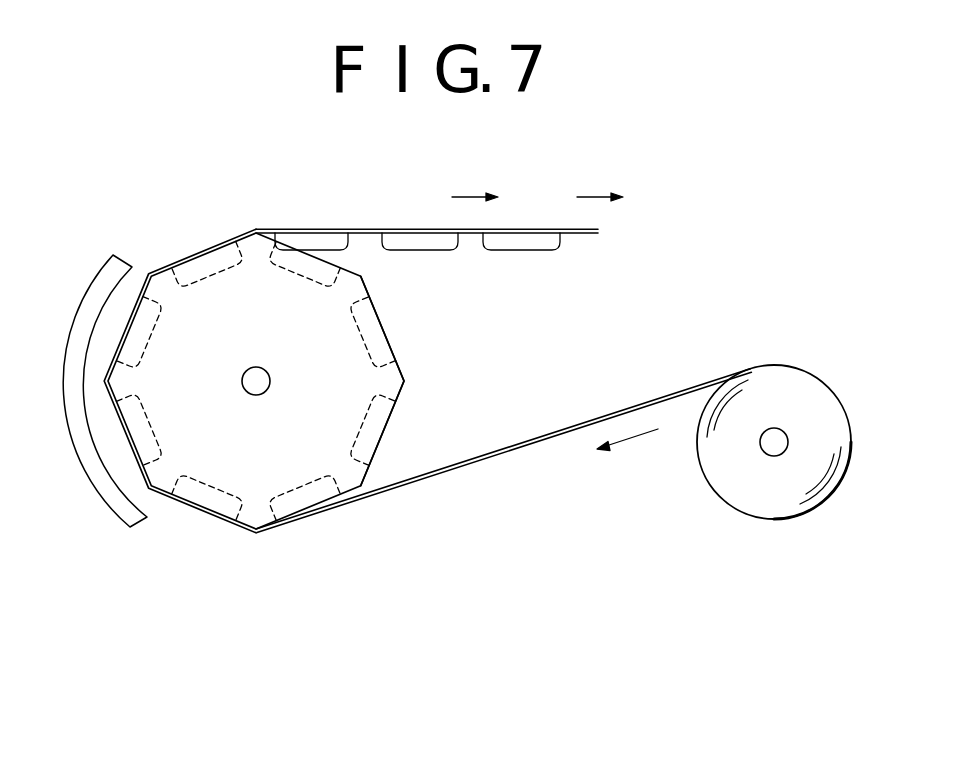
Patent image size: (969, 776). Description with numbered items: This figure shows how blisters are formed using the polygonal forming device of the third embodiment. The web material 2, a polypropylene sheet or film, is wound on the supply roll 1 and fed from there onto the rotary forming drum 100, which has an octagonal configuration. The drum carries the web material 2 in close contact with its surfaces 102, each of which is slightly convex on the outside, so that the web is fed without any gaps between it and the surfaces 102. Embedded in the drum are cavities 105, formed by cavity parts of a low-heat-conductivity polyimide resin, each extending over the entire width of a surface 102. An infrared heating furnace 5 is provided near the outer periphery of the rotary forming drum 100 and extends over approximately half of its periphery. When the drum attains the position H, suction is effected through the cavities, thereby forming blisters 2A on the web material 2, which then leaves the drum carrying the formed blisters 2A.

The supply roll 1 is at (816, 389).
The web material 2 is at (618, 412).
The blisters 2A is at (526, 246).
The infrared heating furnace 5 is at (92, 470).
The position H is at (125, 305).
The rotary forming drum 100 is at (390, 325).
The surface 102 is at (402, 382).
The cavities 105 is at (157, 318).